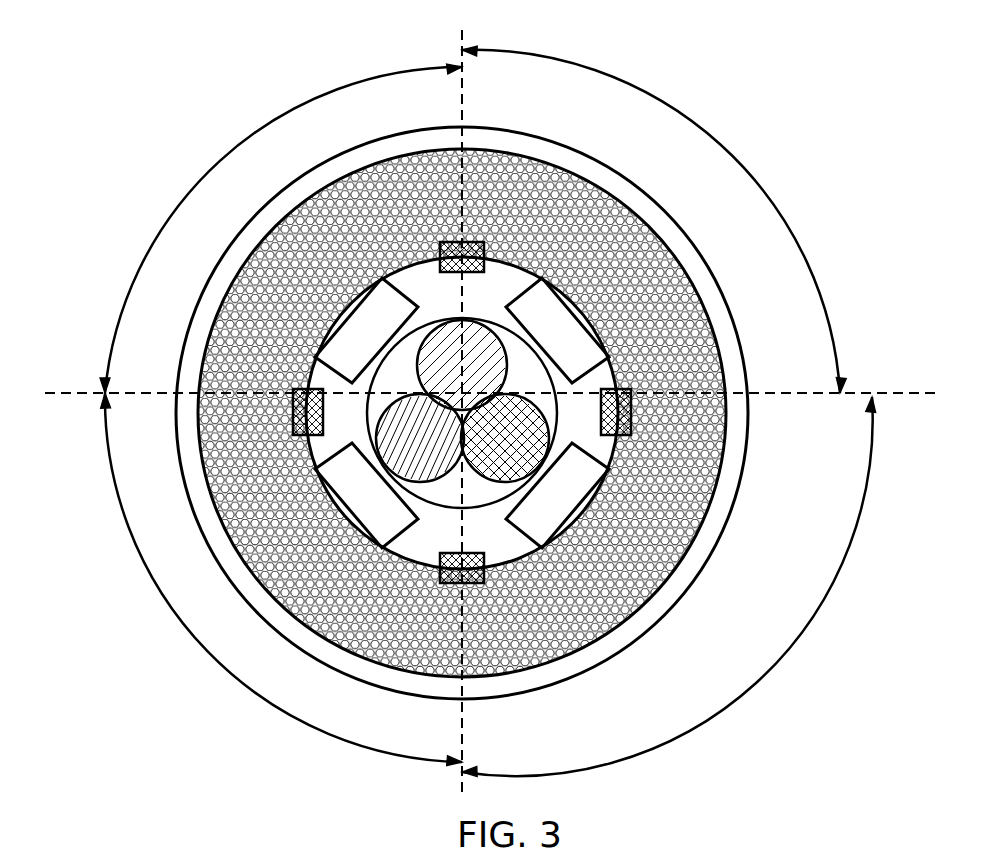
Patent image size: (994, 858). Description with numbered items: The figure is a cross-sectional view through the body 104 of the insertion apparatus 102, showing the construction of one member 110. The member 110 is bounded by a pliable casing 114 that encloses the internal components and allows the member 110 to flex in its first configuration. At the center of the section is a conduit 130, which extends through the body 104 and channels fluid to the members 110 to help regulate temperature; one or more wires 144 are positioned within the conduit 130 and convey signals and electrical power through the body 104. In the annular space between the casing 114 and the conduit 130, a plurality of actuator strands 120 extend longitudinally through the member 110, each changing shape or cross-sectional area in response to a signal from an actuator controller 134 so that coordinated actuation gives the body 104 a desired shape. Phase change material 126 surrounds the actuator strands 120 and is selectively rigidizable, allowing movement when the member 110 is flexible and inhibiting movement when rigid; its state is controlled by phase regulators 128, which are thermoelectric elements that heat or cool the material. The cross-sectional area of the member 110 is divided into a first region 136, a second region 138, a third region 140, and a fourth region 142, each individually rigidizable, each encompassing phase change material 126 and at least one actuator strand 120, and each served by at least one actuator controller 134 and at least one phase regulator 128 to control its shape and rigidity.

The insertion apparatus 102 is at (490, 408).
The body 104 is at (602, 150).
The member 110 is at (720, 294).
The casing 114 is at (503, 138).
The actuator strand 120 is at (615, 247).
The phase change material 126 is at (618, 585).
The phase regulator 128 is at (612, 408).
The conduit 130 is at (458, 318).
The actuator controller 134 is at (578, 342).
The first region 136 is at (156, 234).
The second region 138 is at (718, 136).
The third region 140 is at (733, 702).
The fourth region 142 is at (287, 712).
The wire 144 is at (495, 442).